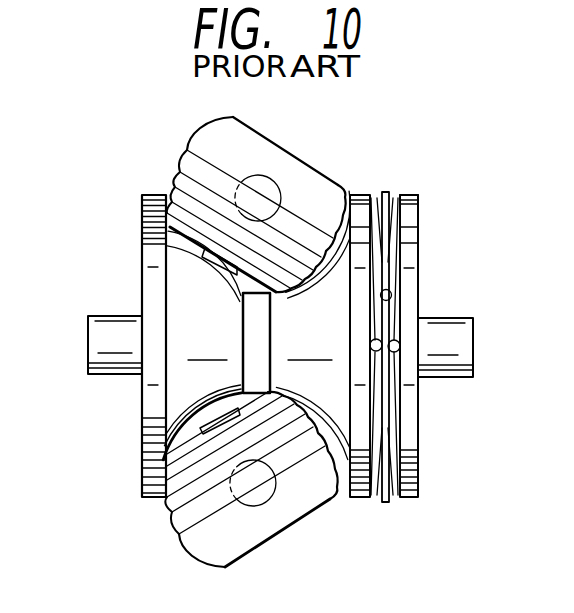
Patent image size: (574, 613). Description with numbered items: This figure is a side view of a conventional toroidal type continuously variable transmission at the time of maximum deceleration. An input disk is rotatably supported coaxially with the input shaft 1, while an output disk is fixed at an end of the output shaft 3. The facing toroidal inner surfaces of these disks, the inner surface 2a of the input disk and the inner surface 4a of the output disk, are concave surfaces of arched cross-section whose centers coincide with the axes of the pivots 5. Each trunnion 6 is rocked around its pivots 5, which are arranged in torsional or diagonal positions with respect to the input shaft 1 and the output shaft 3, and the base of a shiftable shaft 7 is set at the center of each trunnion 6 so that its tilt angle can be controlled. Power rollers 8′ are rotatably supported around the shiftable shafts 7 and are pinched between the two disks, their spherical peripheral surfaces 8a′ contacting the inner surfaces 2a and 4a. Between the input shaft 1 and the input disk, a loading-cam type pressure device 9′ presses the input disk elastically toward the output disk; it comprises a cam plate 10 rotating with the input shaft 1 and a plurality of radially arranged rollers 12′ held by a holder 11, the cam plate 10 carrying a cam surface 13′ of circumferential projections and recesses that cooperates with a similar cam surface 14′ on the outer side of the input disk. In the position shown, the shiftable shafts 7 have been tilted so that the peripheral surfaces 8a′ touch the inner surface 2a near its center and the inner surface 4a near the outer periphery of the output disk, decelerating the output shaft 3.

The input shaft 1 is at (463, 341).
The inner surface 2a is at (338, 498).
The output shaft 3 is at (100, 335).
The inner surface 4a is at (215, 276).
The pivot 5 is at (270, 176).
The trunnion 6 is at (198, 138).
The shiftable shaft 7 is at (162, 226).
The power roller 8′ is at (170, 193).
The peripheral surface 8a′ is at (178, 203).
The pressure device 9′ is at (419, 180).
The cam plate 10 is at (410, 238).
The holder 11 is at (389, 195).
The roller 12′ is at (393, 338).
The cam surface 13′ is at (386, 294).
The cam surface 14′ is at (336, 383).